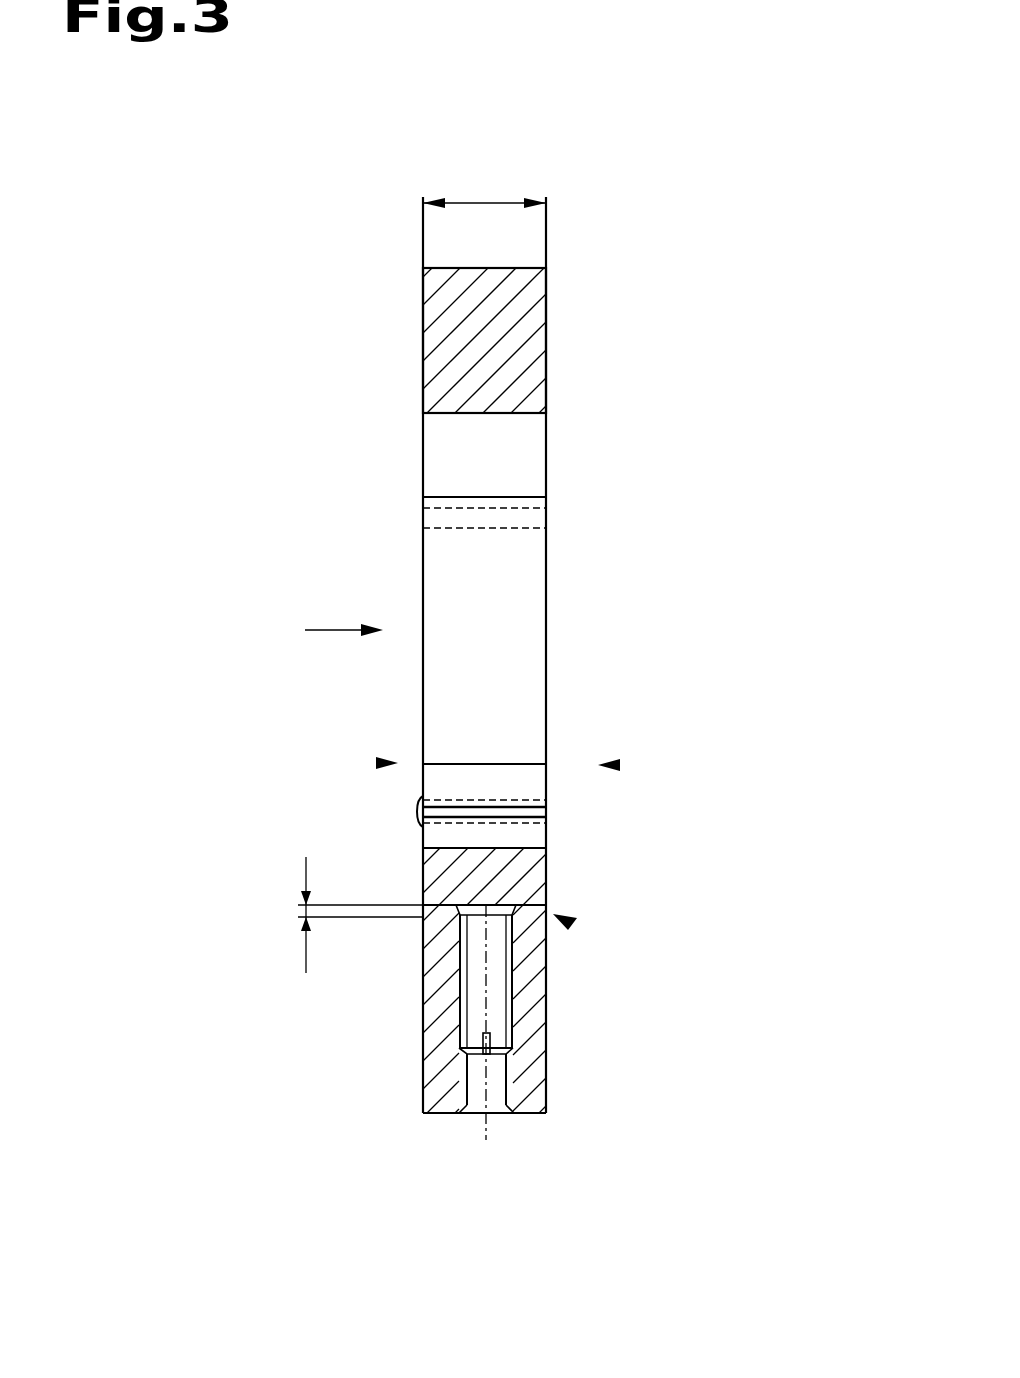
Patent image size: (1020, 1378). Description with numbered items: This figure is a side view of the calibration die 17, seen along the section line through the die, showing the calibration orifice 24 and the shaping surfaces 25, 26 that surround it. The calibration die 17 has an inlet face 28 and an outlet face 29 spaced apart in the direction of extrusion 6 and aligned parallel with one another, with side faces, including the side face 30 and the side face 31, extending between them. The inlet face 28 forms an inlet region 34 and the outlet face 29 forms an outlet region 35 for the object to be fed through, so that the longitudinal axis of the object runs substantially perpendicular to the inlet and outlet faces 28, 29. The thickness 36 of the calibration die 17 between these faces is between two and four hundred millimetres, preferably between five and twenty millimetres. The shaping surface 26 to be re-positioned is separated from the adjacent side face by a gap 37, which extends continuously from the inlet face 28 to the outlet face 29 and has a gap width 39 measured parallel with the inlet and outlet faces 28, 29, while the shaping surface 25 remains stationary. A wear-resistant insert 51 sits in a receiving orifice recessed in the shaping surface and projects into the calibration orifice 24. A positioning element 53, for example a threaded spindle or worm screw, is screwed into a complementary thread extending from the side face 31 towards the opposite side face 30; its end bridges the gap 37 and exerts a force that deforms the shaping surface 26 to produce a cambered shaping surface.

The direction of extrusion 6 is at (336, 628).
The calibration die 17 is at (517, 307).
The calibration orifice 24 is at (530, 629).
The shaping surface 25 is at (489, 413).
The shaping surface 26 is at (487, 766).
The inlet face 28 is at (425, 1068).
The outlet face 29 is at (550, 1048).
The side face 30 is at (486, 257).
The side face 31 is at (537, 1113).
The inlet region 34 is at (382, 763).
The outlet region 35 is at (614, 765).
The thickness 36 is at (490, 203).
The gap 37 is at (570, 922).
The gap width 39 is at (306, 963).
The wear-resistant insert 51 is at (530, 811).
The positioning element 53 is at (473, 1045).